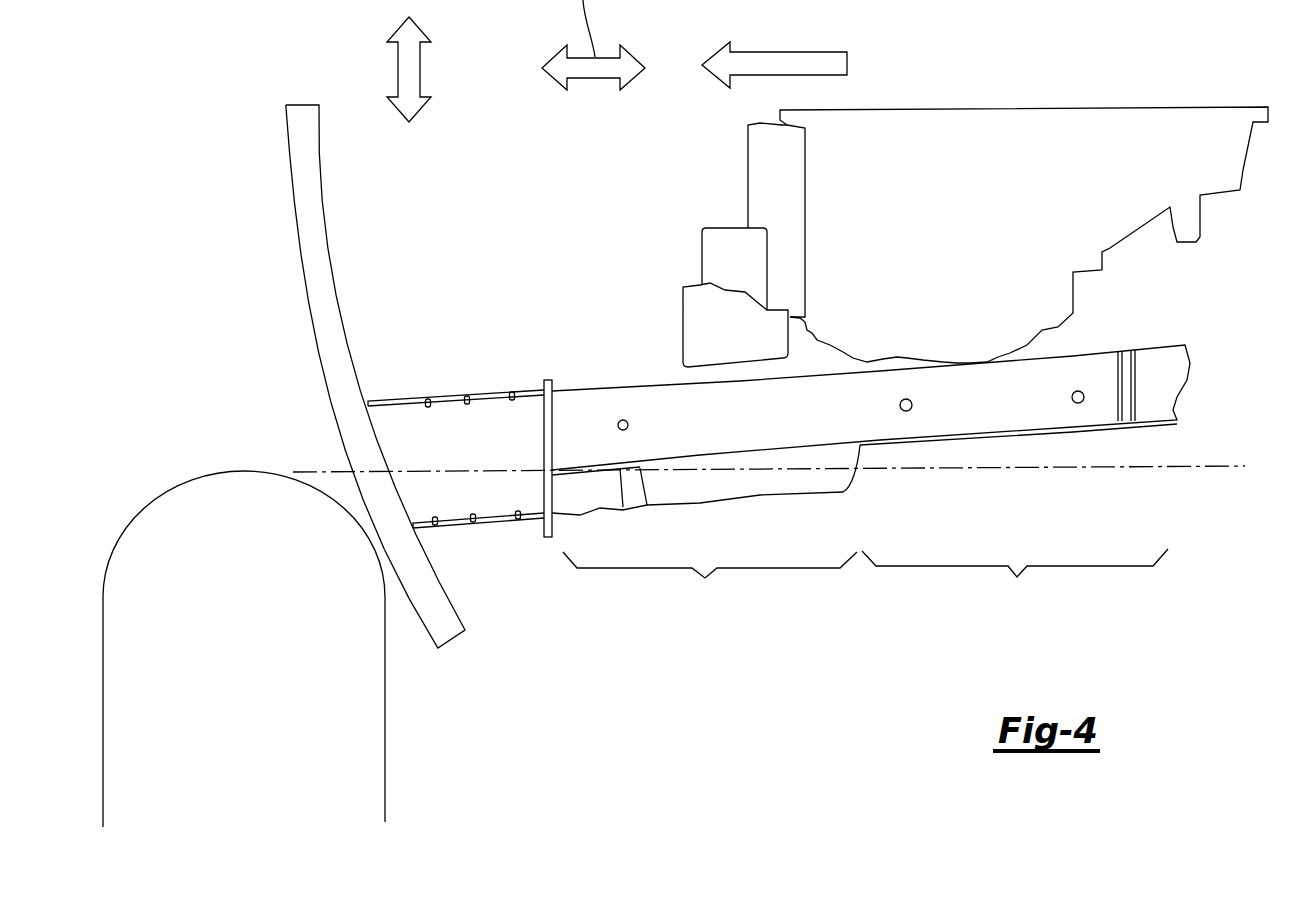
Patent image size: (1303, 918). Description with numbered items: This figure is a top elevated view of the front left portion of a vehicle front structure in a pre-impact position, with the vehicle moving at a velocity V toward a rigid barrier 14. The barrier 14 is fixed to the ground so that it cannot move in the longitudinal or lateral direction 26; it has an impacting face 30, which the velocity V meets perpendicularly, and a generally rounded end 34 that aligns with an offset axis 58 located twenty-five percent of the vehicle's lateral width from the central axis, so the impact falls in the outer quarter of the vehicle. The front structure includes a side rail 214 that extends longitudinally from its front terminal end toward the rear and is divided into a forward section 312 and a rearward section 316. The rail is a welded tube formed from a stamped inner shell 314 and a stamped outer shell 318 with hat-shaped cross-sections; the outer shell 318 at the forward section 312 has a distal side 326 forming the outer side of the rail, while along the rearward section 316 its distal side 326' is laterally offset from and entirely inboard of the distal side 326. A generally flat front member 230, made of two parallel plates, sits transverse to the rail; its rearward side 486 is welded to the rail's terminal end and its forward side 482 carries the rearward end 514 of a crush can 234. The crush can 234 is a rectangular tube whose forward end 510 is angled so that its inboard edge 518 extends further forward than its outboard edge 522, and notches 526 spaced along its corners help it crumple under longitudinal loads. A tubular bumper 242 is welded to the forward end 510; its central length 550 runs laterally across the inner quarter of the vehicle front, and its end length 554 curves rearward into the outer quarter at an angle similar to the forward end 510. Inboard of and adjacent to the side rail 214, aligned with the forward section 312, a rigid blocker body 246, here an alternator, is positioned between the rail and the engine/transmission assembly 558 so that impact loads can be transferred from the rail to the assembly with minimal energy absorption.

The barrier 14 is at (365, 737).
The lateral direction 26 is at (420, 68).
The impacting face 30 is at (387, 705).
The rounded end 34 is at (212, 473).
The offset axis 58 is at (317, 473).
The side rail 214 is at (985, 375).
The front member 230 is at (560, 538).
The crush can 234 is at (427, 499).
The bumper 242 is at (317, 200).
The blocker body 246 is at (698, 300).
The forward section 312 is at (710, 579).
The inner shell 314 is at (825, 382).
The rearward section 316 is at (1015, 578).
The outer shell 318 is at (820, 482).
The distal side 326 is at (706, 498).
The distal side 326' is at (1134, 444).
The forward side 482 is at (540, 432).
The rearward side 486 is at (553, 412).
The forward end 510 is at (398, 470).
The rearward end 514 is at (545, 380).
The inboard edge 518 is at (415, 393).
The outboard edge 522 is at (546, 540).
The notches 526 is at (512, 392).
The central length 550 is at (288, 173).
The end length 554 is at (418, 595).
The engine/transmission assembly 558 is at (997, 138).
The velocity V is at (812, 52).